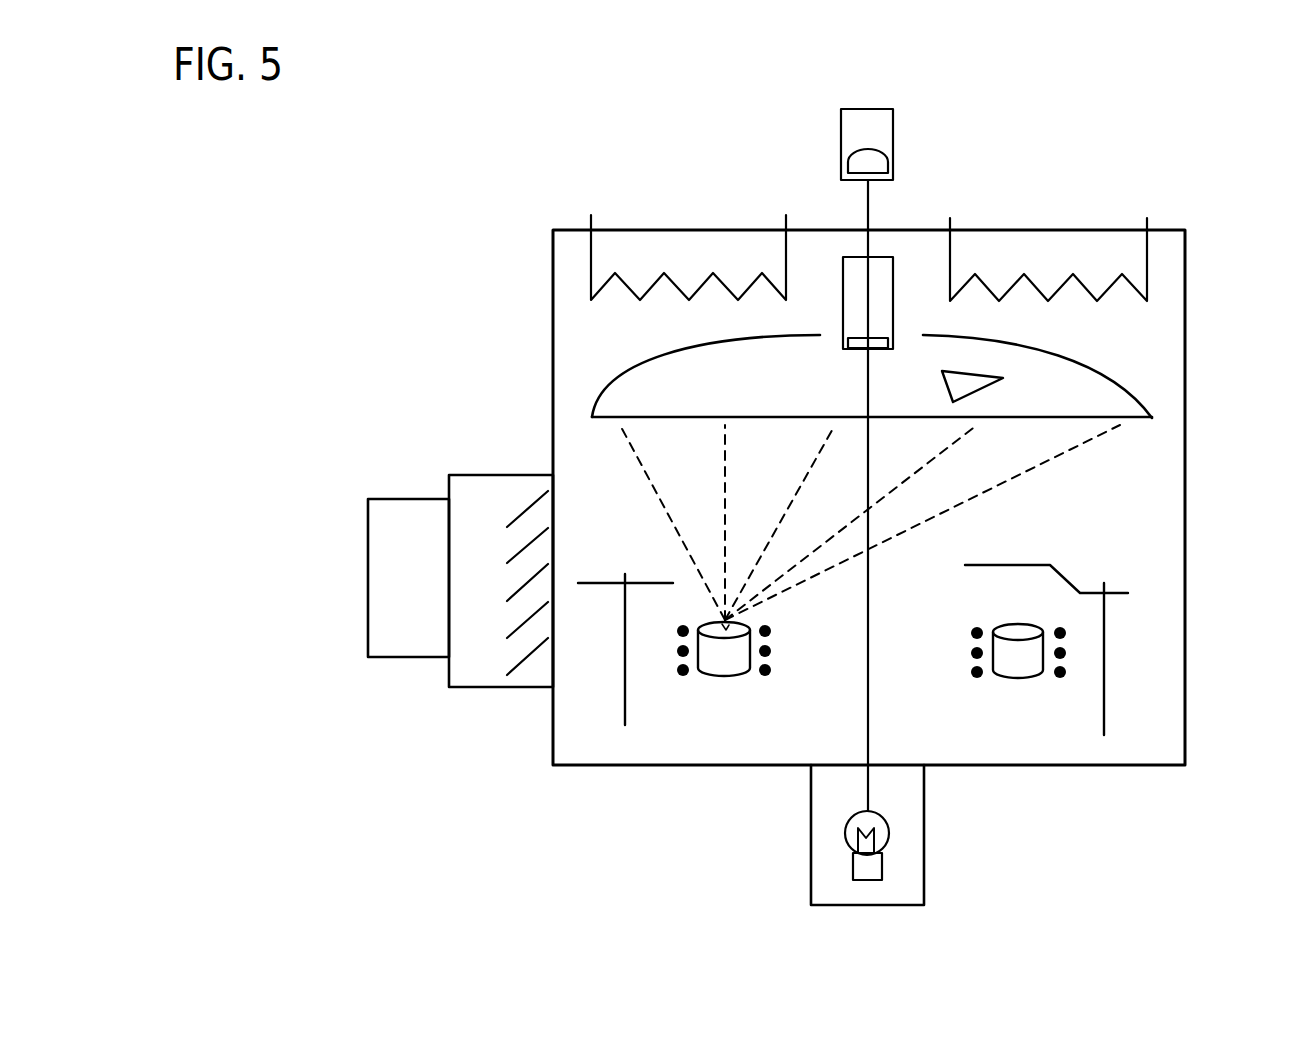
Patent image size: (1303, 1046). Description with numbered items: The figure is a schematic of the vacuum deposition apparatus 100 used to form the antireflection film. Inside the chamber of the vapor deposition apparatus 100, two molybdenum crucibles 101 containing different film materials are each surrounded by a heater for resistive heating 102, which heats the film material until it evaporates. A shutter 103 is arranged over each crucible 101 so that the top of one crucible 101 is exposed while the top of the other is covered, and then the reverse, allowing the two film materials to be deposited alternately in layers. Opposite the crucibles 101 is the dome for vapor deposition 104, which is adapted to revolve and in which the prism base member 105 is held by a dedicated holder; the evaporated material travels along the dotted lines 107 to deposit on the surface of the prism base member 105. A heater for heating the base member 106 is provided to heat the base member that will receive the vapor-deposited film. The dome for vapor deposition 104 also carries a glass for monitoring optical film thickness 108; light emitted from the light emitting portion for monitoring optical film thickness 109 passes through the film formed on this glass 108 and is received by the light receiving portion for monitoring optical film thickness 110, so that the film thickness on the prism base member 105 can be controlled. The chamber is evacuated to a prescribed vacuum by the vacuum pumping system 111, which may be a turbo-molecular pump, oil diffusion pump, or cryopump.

The vapor deposition apparatus 100 is at (521, 207).
The crucible 101 is at (727, 683).
The heater for resistive heating 102 is at (682, 677).
The shutter 103 is at (598, 587).
The dome for vapor deposition 104 is at (1095, 360).
The prism base member 105 is at (1003, 378).
The heater for heating the base member 106 is at (1147, 265).
The dotted lines 107 is at (635, 458).
The glass for monitoring optical film thickness 108 is at (878, 333).
The light emitting portion for monitoring optical film thickness 109 is at (883, 867).
The light receiving portion for monitoring optical film thickness 110 is at (893, 127).
The vacuum pumping system 111 is at (410, 657).